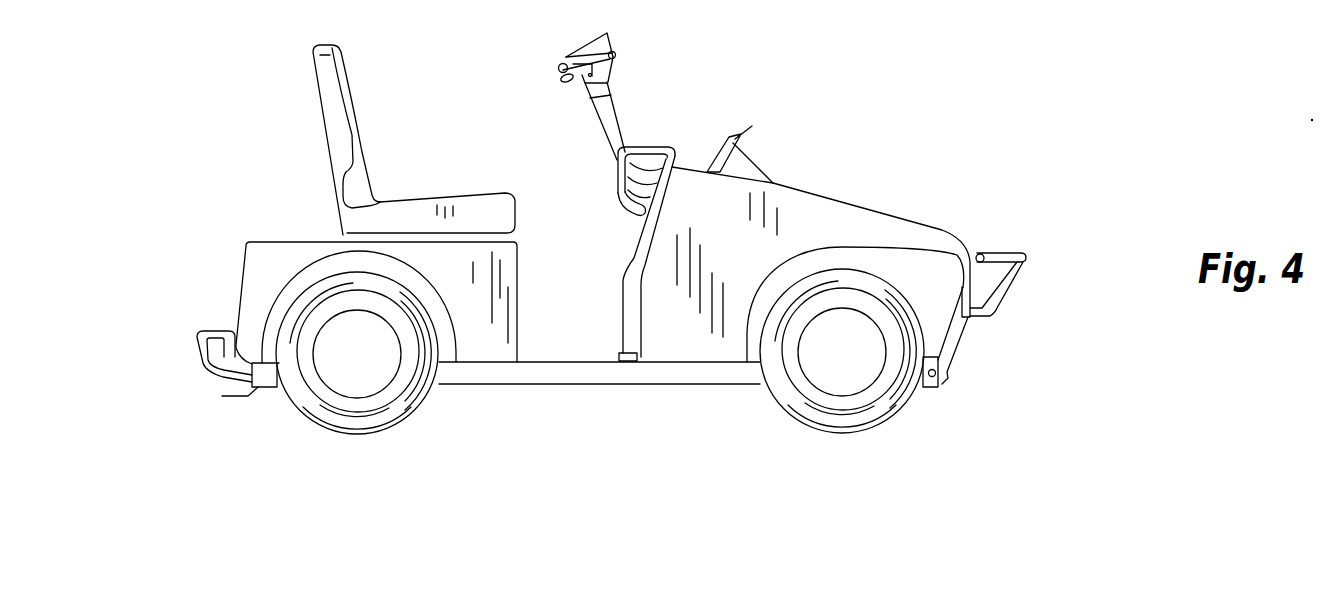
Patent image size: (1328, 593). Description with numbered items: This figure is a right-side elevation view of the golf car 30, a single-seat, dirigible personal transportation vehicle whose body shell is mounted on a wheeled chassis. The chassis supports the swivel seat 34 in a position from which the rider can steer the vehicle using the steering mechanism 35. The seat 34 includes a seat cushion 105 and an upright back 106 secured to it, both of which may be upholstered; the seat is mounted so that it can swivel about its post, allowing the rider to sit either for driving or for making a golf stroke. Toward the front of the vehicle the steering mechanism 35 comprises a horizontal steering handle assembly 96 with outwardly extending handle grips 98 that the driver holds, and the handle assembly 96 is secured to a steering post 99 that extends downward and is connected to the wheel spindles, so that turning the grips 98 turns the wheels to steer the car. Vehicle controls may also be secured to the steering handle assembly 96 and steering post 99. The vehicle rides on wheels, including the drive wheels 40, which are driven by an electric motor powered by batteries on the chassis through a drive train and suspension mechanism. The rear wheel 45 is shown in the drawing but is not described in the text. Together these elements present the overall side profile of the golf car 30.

The golf car 30 is at (246, 208).
The swivel seat 34 is at (438, 130).
The steering mechanism 35 is at (616, 111).
The drive wheels 40 is at (397, 411).
The rear wheel 45 is at (818, 413).
The steering handle assembly 96 is at (603, 68).
The handle grips 98 is at (558, 72).
The steering post 99 is at (613, 127).
The seat cushion 105 is at (462, 202).
The upright back 106 is at (337, 90).